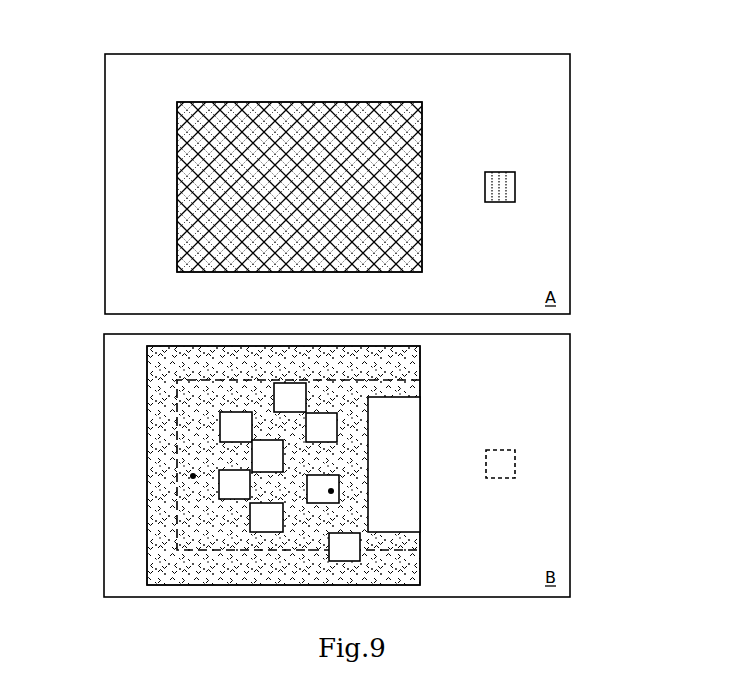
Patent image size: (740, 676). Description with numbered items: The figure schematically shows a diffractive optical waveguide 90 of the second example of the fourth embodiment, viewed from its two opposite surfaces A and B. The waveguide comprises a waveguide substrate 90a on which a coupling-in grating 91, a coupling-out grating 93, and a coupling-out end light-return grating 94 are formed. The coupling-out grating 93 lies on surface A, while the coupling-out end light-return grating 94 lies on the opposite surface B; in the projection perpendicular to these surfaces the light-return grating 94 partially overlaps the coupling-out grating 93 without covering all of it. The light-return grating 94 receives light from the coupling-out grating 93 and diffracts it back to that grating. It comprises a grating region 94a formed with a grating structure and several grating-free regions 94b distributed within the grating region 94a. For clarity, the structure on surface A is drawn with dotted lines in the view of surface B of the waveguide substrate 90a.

The diffractive optical waveguide 90 is at (383, 302).
The waveguide substrate 90a is at (571, 190).
The coupling-in grating 91 is at (498, 172).
The coupling-out grating 93 is at (177, 203).
The coupling-out end light-return grating 94 is at (146, 390).
The grating region 94a is at (193, 476).
The grating-free regions 94b is at (331, 491).